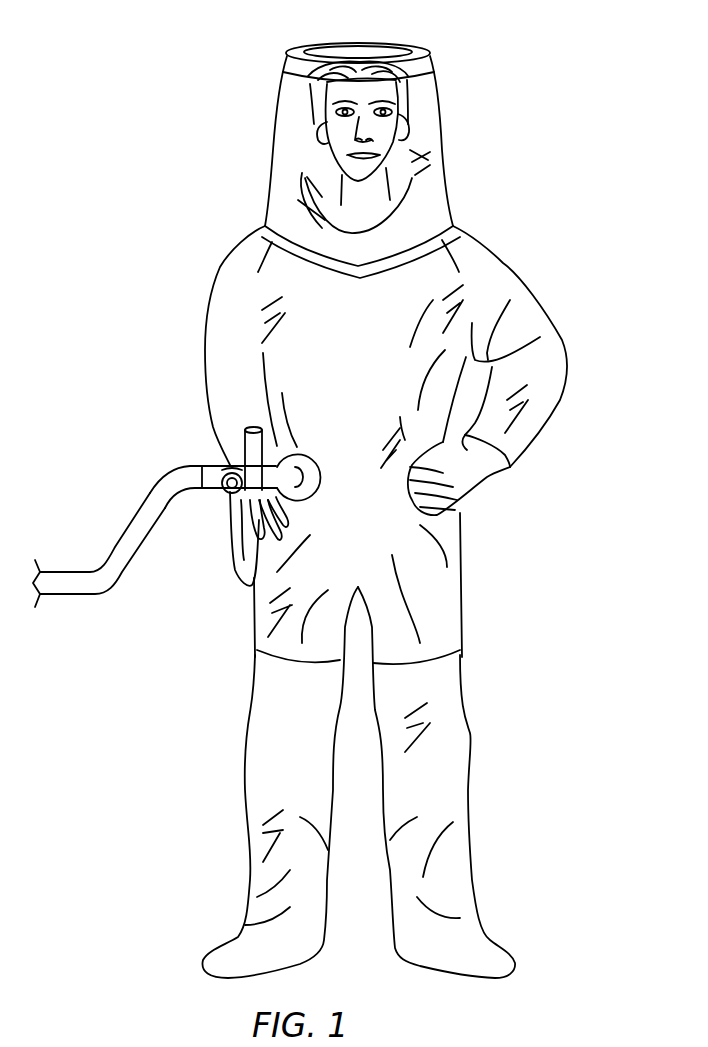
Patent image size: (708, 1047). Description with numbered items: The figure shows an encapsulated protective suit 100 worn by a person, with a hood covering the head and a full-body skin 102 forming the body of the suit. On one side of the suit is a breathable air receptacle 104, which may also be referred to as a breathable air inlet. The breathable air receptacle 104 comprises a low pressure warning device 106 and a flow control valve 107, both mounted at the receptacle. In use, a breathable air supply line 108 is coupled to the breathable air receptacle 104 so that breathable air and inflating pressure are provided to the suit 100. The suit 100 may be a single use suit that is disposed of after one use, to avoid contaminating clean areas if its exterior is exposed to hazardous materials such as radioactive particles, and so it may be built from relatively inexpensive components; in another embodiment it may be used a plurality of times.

The encapsulated protective suit 100 is at (528, 96).
The skin 102 is at (490, 253).
The breathable air receptacle 104 is at (163, 500).
The low pressure warning device 106 is at (233, 534).
The flow control valve 107 is at (223, 463).
The breathable air supply line 108 is at (130, 560).